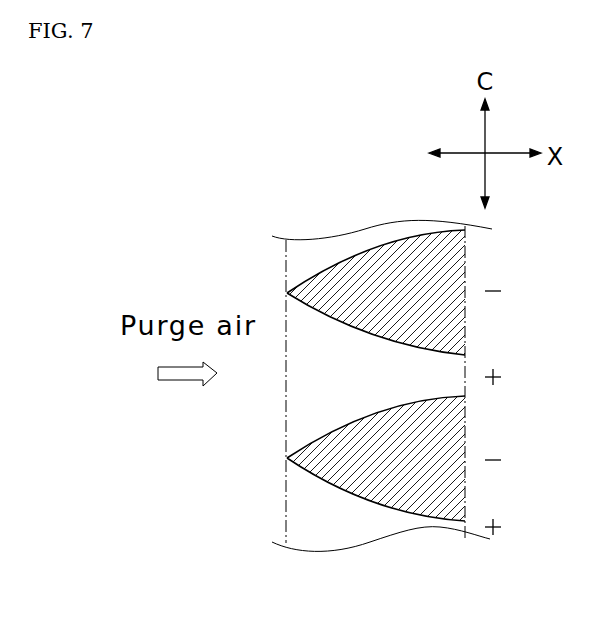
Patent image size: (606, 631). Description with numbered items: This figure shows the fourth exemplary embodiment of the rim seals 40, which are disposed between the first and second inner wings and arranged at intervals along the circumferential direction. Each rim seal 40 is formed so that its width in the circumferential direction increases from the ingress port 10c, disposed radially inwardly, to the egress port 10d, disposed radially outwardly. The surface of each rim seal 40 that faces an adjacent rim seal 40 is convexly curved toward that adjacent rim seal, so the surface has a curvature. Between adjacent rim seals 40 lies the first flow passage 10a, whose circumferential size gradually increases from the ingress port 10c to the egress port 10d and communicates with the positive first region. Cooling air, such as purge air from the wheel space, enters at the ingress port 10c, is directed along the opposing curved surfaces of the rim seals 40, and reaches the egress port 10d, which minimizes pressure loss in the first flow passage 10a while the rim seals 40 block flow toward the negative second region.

The rim seal 40 is at (319, 262).
The first flow passage 10a is at (403, 381).
The ingress port 10c is at (287, 405).
The egress port 10d is at (465, 386).